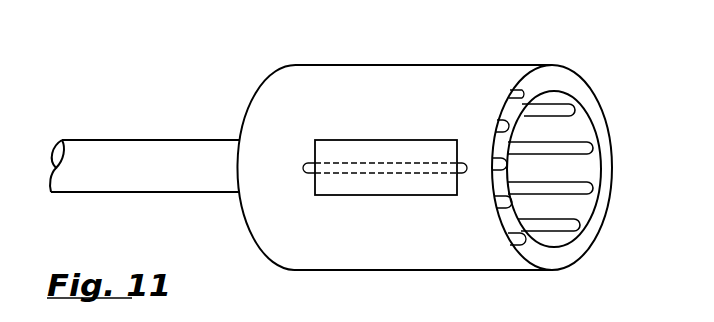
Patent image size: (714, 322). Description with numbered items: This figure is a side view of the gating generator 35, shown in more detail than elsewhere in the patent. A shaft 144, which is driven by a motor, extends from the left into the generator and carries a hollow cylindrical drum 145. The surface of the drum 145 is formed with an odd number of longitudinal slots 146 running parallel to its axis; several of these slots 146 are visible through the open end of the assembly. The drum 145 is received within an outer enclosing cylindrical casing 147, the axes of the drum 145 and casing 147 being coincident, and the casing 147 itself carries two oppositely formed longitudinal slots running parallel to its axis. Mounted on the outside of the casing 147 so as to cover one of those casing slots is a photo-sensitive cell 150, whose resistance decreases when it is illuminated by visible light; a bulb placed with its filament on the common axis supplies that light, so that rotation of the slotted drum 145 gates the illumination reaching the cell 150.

The gating generator 35 is at (180, 88).
The shaft 144 is at (145, 193).
The hollow cylindrical drum 145 is at (580, 210).
The longitudinal slots 146 is at (560, 102).
The outer enclosing cylindrical casing 147 is at (548, 257).
The photo-sensitive cell 150 is at (347, 140).